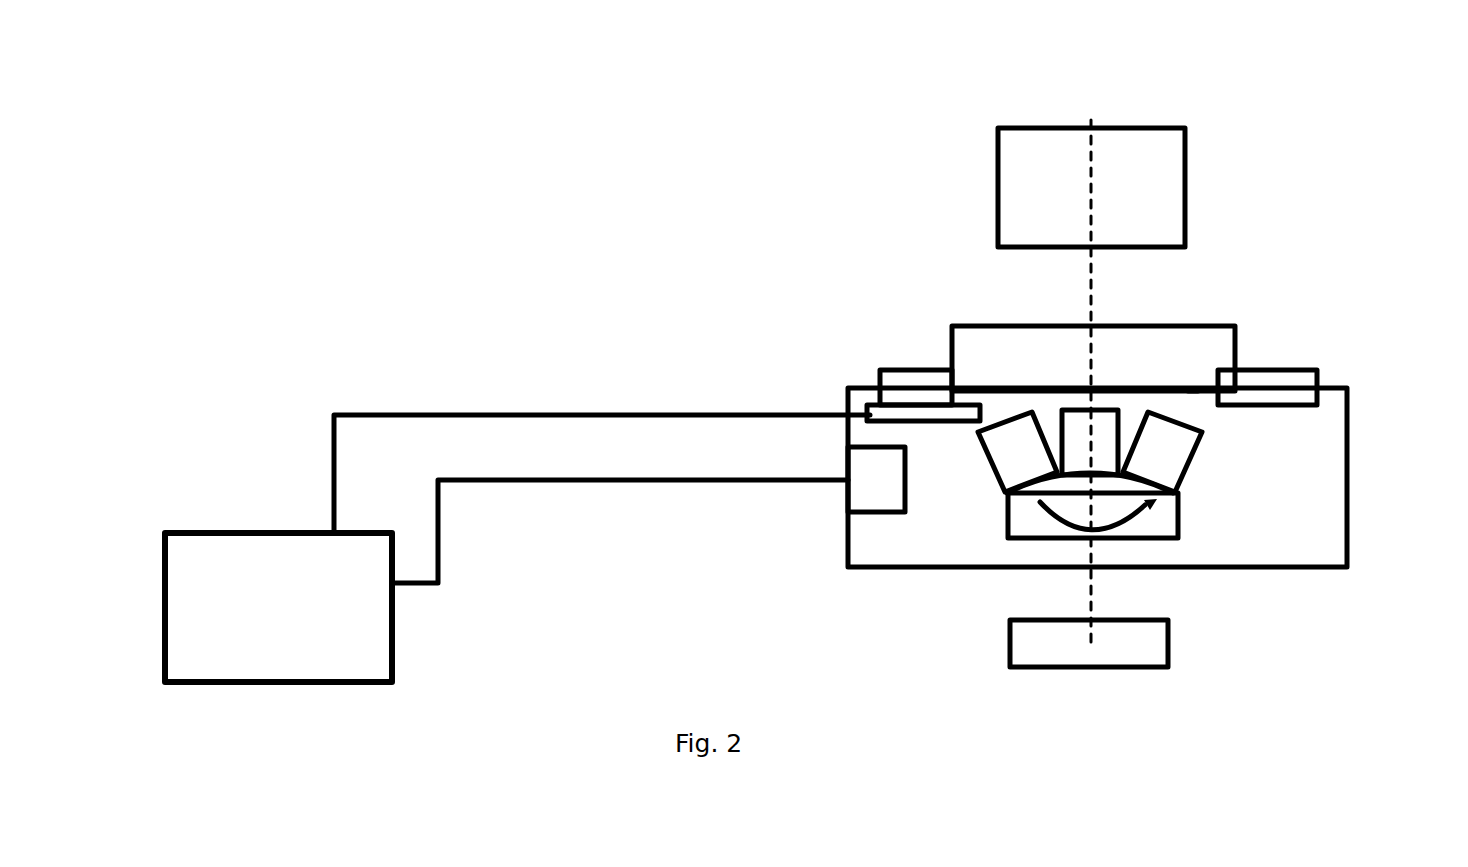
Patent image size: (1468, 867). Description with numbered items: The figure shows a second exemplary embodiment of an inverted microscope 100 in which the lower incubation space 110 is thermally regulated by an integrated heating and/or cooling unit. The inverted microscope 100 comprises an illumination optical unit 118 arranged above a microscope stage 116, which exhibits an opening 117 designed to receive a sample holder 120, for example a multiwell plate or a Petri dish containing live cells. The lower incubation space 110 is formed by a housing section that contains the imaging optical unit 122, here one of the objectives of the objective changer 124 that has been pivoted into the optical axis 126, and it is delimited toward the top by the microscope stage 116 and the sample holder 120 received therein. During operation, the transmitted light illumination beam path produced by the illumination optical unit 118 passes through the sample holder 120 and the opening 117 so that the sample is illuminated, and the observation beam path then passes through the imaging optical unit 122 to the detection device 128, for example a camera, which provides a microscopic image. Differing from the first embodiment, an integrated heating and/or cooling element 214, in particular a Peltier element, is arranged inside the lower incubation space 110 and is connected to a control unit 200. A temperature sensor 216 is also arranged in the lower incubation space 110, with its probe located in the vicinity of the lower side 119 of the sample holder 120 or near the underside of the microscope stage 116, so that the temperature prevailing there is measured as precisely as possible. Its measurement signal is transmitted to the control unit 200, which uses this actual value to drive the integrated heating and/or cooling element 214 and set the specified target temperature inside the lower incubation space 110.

The inverted microscope 100 is at (872, 138).
The lower incubation space 110 is at (860, 552).
The microscope stage 116 is at (1280, 393).
The opening 117 is at (1087, 580).
The illumination optical unit 118 is at (1185, 212).
The lower side of the sample holder 119 is at (1193, 393).
The sample holder 120 is at (1193, 353).
The imaging optical unit 122 is at (1100, 450).
The objective changer 124 is at (1180, 515).
The optical axis 126 is at (1091, 275).
The detection device 128 is at (1155, 648).
The control unit 200 is at (205, 577).
The integrated heating and/or cooling element 214 is at (858, 495).
The temperature sensor 216 is at (853, 412).